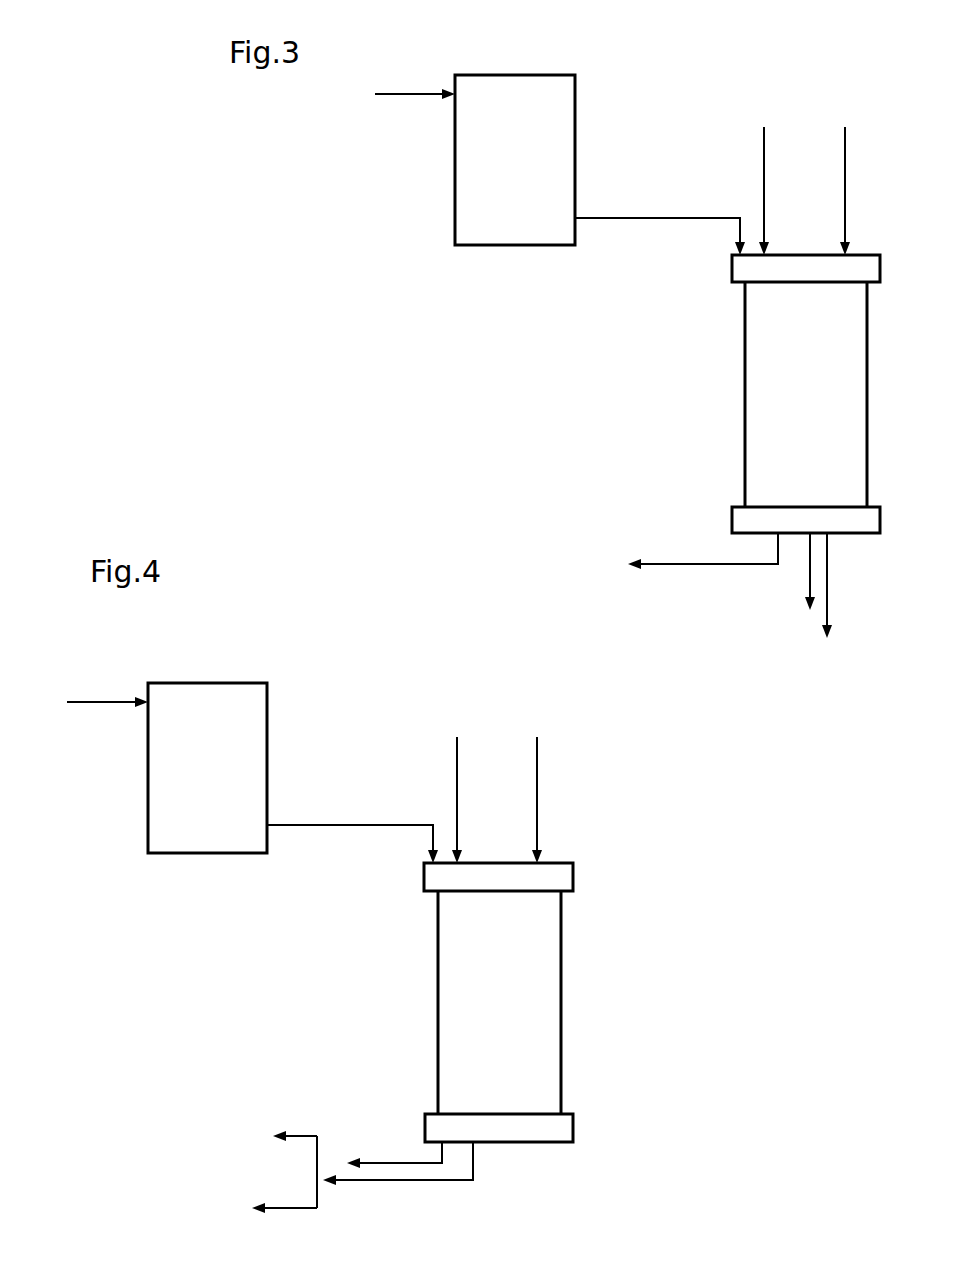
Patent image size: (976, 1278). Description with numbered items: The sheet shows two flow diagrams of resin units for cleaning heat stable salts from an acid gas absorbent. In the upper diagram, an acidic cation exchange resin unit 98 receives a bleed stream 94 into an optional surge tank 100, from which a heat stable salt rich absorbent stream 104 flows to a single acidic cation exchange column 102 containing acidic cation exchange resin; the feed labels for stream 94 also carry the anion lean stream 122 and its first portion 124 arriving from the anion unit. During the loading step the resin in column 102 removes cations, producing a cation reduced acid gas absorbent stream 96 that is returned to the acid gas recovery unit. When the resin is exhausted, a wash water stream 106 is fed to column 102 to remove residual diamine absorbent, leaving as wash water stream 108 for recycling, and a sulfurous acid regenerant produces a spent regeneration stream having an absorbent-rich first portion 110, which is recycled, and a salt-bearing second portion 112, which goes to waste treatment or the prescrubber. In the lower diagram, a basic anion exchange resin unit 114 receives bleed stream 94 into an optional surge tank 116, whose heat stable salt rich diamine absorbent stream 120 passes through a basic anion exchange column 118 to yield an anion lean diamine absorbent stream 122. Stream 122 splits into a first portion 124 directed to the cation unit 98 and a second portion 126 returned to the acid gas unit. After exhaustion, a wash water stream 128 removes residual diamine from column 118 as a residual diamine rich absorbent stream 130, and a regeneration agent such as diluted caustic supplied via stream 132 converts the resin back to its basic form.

In FIG. 3, the bleed stream 94 is at (414, 109).
In FIG. 4, the bleed stream 94 is at (90, 703).
In FIG. 3, the cation reduced acid gas absorbent stream 96 is at (686, 557).
In FIG. 3, the acidic cation exchange resin unit 98 is at (612, 81).
In FIG. 3, the surge tank 100 is at (492, 176).
In FIG. 3, the acidic cation exchange column 102 is at (780, 399).
In FIG. 3, the heat stable salt rich absorbent stream 104 is at (653, 217).
In FIG. 3, the wash water stream 106 is at (762, 176).
In FIG. 3, the wash water stream 108 is at (808, 578).
In FIG. 3, the first portion of spent regeneration stream 110 is at (843, 176).
In FIG. 3, the second portion of spent regeneration stream 112 is at (828, 588).
In FIG. 4, the basic anion exchange resin unit 114 is at (357, 673).
In FIG. 4, the surge tank 116 is at (230, 788).
In FIG. 4, the basic anion exchange column 118 is at (473, 1008).
In FIG. 4, the heat stable salt rich diamine absorbent stream 120 is at (343, 825).
In FIG. 3, the anion lean diamine absorbent stream 122 is at (404, 127).
In FIG. 4, the anion lean diamine absorbent stream 122 is at (402, 1183).
In FIG. 3, the first portion 124 is at (404, 143).
In FIG. 4, the first portion 124 is at (271, 1137).
In FIG. 4, the second portion 126 is at (258, 1209).
In FIG. 4, the wash water stream 128 is at (457, 785).
In FIG. 4, the residual diamine rich absorbent stream 130 is at (403, 1163).
In FIG. 4, the regeneration agent stream 132 is at (537, 785).